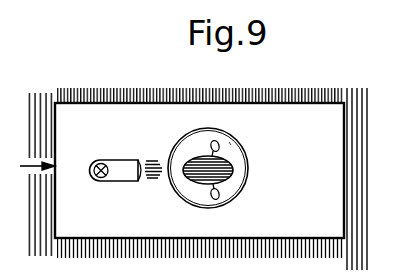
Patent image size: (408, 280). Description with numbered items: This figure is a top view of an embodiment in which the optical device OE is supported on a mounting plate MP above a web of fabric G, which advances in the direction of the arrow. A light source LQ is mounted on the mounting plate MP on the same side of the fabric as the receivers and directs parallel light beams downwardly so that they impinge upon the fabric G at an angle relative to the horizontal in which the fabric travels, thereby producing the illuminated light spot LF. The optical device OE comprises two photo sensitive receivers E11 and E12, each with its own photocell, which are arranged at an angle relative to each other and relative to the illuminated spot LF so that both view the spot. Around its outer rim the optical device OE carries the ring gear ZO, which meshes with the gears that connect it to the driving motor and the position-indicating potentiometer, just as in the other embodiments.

The mounting plate MP is at (331, 134).
The web of fabric G is at (28, 166).
The light source LQ is at (113, 160).
The ring gear ZO is at (248, 166).
The optical device OE is at (230, 143).
The illuminated light spot LF is at (227, 174).
The photo sensitive receiver E12 is at (214, 141).
The photo sensitive receiver E11 is at (213, 200).